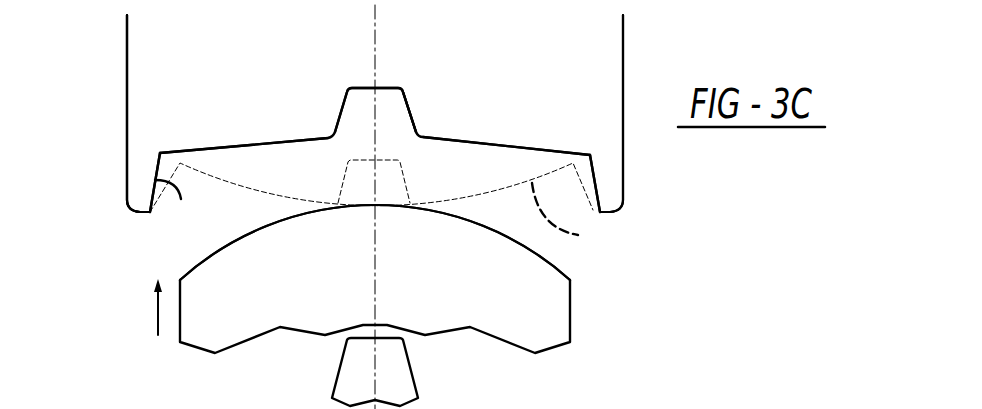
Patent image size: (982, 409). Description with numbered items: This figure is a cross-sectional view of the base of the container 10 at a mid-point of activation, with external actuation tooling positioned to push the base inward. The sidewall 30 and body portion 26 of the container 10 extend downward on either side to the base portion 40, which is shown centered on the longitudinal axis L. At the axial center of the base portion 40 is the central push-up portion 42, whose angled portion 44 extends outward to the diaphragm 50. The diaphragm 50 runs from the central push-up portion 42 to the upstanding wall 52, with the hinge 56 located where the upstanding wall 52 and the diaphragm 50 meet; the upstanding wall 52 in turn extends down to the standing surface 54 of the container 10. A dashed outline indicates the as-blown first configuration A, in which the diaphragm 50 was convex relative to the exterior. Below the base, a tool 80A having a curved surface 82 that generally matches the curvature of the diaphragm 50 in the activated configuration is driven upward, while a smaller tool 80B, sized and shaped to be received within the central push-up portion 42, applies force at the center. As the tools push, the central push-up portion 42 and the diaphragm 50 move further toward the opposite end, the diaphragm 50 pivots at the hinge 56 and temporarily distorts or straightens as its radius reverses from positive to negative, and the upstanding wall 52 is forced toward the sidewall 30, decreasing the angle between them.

The container 10 is at (665, 58).
The body portion 26 is at (127, 135).
The sidewall 30 is at (127, 88).
The base portion 40 is at (158, 240).
The central push-up portion 42 is at (388, 88).
The angled portion 44 is at (415, 123).
The diaphragm 50 is at (260, 145).
The upstanding wall 52 is at (176, 204).
The standing surface 54 is at (150, 212).
The hinge 56 is at (160, 153).
The tool 80A is at (545, 302).
The tool 80B is at (398, 373).
The curved surface 82 is at (258, 233).
The longitudinal axis L is at (375, 28).
The first configuration A is at (563, 220).